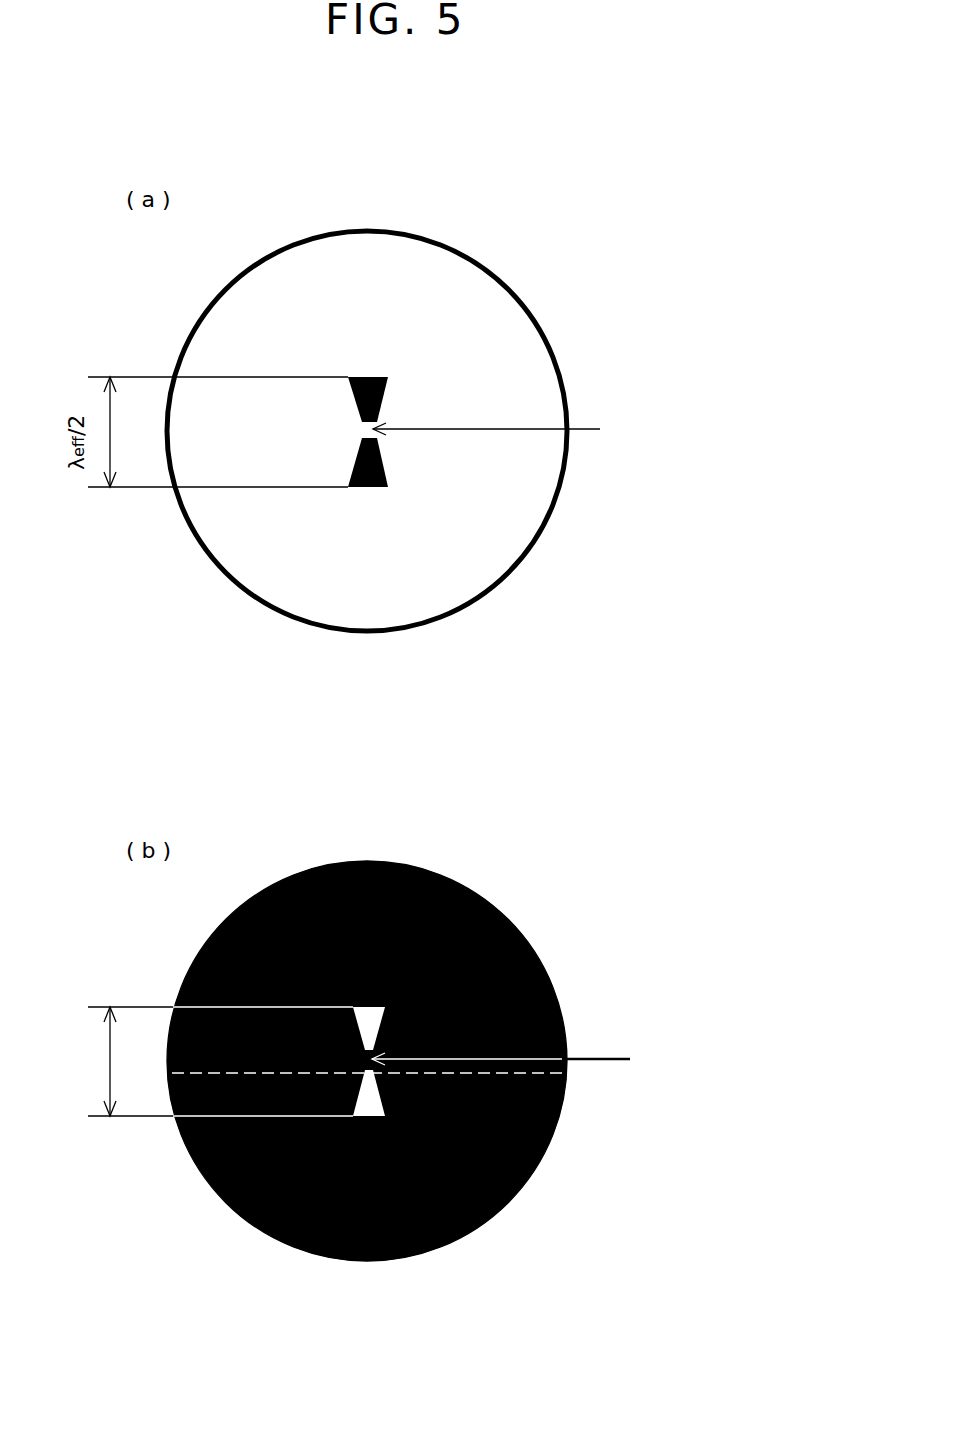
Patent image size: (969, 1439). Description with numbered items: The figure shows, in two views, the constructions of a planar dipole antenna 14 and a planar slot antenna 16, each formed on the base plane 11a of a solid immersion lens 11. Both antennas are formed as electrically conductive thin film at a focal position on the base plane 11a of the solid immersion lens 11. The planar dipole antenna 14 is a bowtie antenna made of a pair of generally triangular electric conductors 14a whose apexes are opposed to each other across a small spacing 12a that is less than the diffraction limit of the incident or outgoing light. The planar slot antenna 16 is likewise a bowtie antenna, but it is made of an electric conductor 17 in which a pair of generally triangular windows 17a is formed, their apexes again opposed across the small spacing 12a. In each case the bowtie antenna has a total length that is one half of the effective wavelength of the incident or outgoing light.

The solid immersion lens 11 is at (455, 250).
The base plane 11a is at (340, 270).
The planar dipole antenna 14 is at (502, 513).
The generally triangular electric conductors 14a is at (388, 385).
The small spacing 12a is at (525, 746).
The planar slot antenna 16 is at (363, 1102).
The electric conductor 17 is at (328, 1237).
The generally triangular window 17a is at (385, 1028).